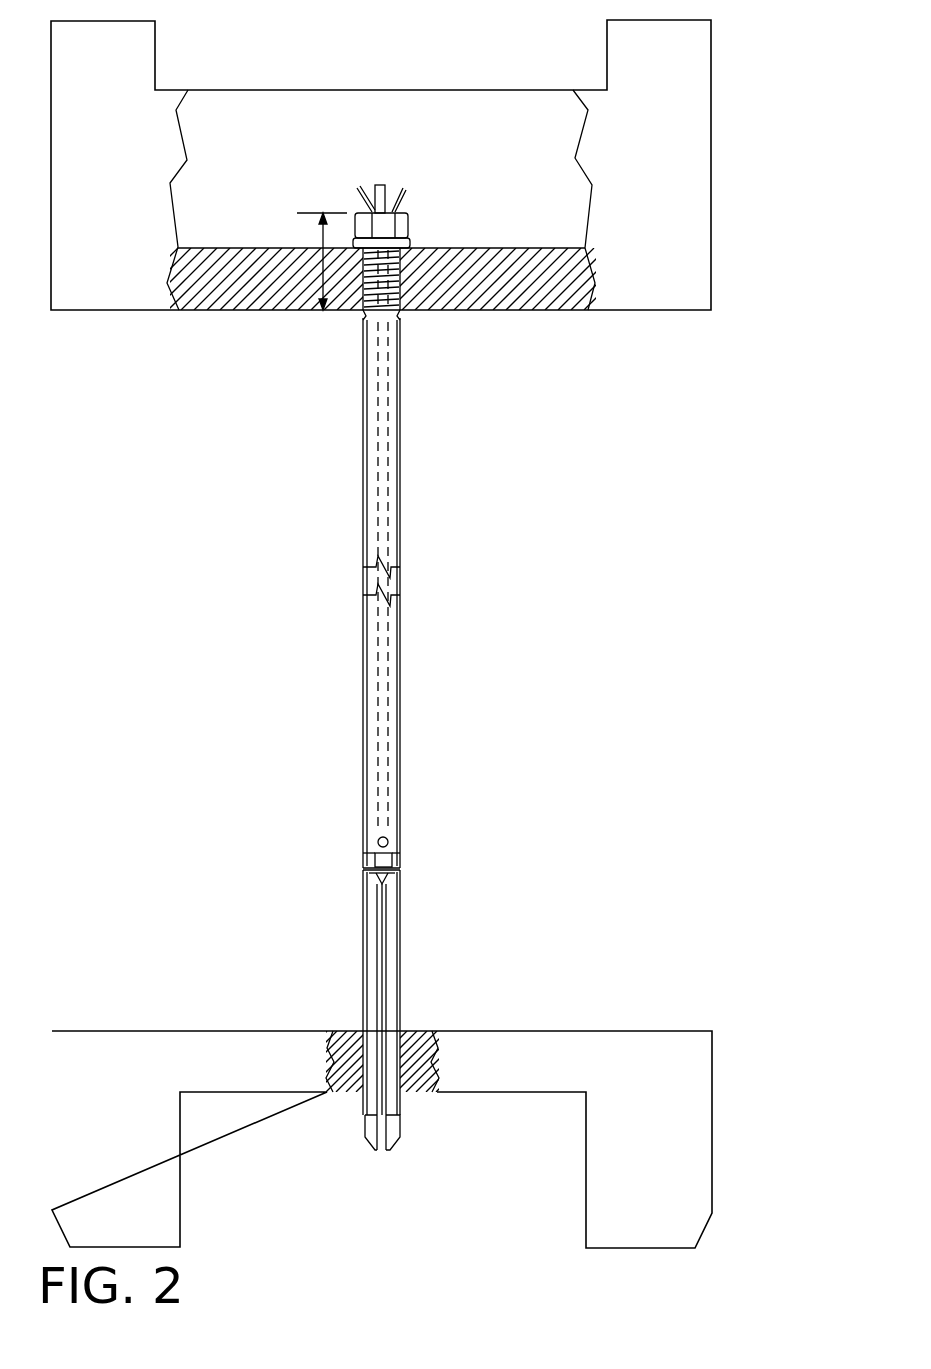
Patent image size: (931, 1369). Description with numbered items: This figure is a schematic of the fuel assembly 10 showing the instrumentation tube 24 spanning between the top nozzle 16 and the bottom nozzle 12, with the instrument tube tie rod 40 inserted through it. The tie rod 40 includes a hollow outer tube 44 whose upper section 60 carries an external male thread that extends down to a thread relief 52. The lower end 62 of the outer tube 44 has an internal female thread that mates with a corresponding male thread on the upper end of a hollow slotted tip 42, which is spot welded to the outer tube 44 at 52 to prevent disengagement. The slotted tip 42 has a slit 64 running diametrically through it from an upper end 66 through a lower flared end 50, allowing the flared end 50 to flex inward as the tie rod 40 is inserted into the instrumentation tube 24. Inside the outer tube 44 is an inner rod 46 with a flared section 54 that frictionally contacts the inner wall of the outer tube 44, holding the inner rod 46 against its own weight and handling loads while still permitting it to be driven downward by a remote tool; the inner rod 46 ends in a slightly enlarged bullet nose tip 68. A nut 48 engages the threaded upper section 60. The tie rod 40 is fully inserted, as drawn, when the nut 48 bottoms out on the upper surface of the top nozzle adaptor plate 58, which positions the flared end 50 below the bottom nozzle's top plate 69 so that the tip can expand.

The fuel assembly 10 is at (633, 712).
The bottom nozzle 12 is at (712, 1095).
The top nozzle 16 is at (711, 138).
The instrumentation tube 24 is at (402, 688).
The instrument tube tie rod 40 is at (418, 542).
The slotted tip 42 is at (402, 987).
The outer tube 44 is at (395, 462).
The inner rod 46 is at (372, 192).
The nut 48 is at (408, 227).
The flared end 50 is at (398, 1125).
The thread relief 52 is at (400, 320).
The flared section 54 is at (405, 200).
The top nozzle adaptor plate 58 is at (542, 298).
The upper section 60 is at (320, 243).
The lower end 62 is at (400, 858).
The slit 64 is at (378, 993).
The upper end 66 is at (400, 875).
The bullet nose tip 68 is at (378, 860).
The top plate 69 is at (538, 1047).